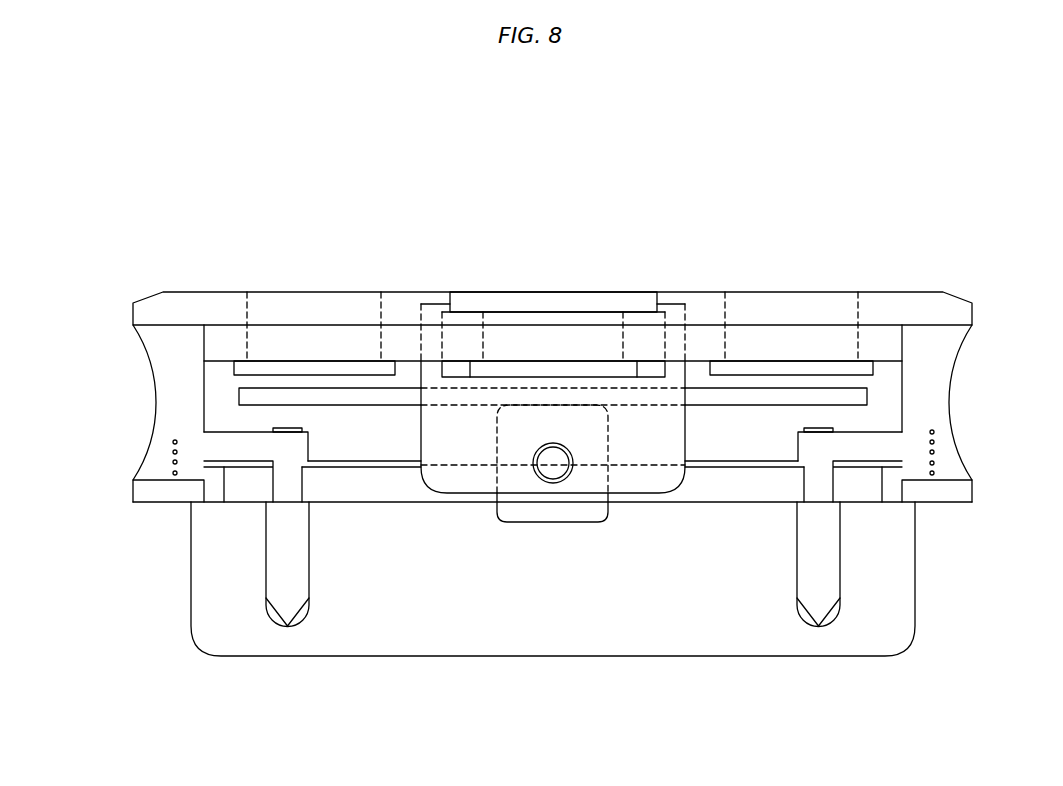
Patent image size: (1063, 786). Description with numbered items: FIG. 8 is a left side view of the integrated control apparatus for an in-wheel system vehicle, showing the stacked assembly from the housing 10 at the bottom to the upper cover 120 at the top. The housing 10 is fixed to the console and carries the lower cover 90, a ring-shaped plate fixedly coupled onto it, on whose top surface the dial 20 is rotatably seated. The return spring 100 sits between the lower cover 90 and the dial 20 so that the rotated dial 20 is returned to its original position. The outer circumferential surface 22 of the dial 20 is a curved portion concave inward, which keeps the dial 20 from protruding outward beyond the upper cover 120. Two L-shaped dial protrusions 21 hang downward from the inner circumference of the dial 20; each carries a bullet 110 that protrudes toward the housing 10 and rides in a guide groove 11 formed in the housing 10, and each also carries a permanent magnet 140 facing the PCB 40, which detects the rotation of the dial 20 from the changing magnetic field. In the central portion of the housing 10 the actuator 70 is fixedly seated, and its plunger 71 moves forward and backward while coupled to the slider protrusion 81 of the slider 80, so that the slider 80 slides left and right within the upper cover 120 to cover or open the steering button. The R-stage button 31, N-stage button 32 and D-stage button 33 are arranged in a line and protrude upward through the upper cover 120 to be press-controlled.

The housing 10 is at (401, 640).
The guide groove 11 is at (267, 532).
The dial 20 is at (937, 355).
The dial protrusion 21 is at (237, 438).
The outer circumferential surface 22 is at (948, 403).
The reverse (R)-stage button 31 is at (307, 347).
The neutral (N)-stage button 32 is at (553, 347).
The drive (D)-stage button 33 is at (777, 345).
The printed circuit board (PCB) 40 is at (755, 397).
The actuator 70 is at (565, 513).
The plunger 71 is at (553, 467).
The slider 80 is at (473, 300).
The slider protrusion 81 is at (467, 440).
The lower cover 90 is at (965, 490).
The return spring 100 is at (935, 440).
The bullet 110 is at (287, 612).
The upper cover 120 is at (927, 302).
The permanent magnet 140 is at (287, 427).